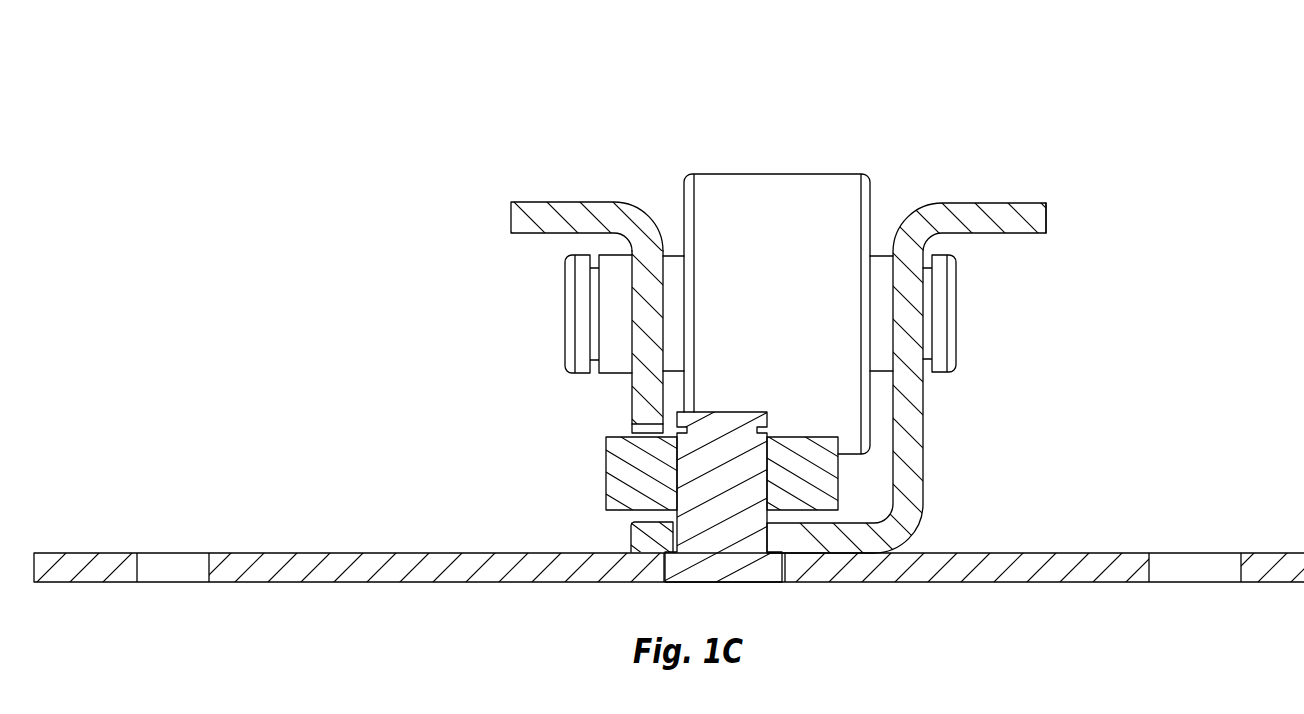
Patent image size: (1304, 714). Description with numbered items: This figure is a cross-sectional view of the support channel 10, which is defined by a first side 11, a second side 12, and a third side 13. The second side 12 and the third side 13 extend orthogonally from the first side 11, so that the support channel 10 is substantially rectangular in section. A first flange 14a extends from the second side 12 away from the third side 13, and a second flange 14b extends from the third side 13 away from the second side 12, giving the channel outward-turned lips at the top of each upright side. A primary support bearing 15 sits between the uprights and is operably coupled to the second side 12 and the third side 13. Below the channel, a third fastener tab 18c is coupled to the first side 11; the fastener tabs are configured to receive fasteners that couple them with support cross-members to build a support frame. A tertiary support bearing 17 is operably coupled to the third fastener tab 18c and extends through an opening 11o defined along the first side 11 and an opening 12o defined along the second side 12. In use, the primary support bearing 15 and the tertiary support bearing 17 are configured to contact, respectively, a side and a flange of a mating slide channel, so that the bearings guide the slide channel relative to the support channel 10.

The support channel 10 is at (1163, 75).
The first side 11 is at (833, 542).
The opening 11o is at (662, 548).
The second side 12 is at (635, 398).
The opening 12o is at (632, 428).
The third side 13 is at (918, 397).
The first flange 14a is at (590, 200).
The second flange 14b is at (986, 203).
The primary support bearing 15 is at (788, 183).
The tertiary support bearing 17 is at (615, 467).
The third fastener tab 18c is at (355, 573).